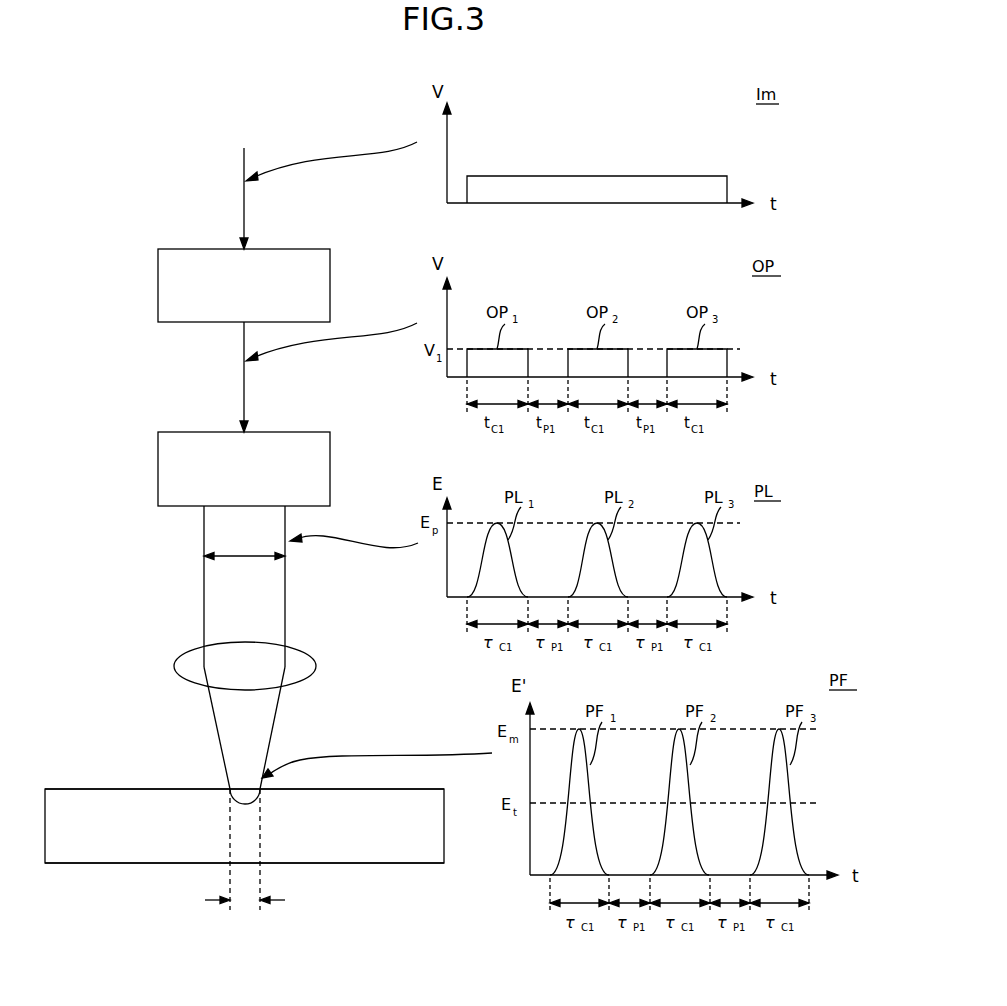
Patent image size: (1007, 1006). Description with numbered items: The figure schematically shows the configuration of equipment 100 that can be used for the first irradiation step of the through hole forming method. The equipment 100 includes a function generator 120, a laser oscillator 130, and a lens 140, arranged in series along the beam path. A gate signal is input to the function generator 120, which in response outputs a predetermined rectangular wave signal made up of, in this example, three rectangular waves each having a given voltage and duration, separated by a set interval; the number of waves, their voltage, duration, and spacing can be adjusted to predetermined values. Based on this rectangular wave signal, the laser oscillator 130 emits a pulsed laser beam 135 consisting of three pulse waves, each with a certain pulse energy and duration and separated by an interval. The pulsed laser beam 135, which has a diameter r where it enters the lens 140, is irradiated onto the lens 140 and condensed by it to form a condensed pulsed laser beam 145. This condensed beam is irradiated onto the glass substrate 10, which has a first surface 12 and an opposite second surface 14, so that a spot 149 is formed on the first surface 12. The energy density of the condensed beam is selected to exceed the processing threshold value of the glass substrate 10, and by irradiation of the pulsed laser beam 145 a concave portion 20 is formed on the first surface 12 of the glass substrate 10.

The equipment 100 is at (126, 104).
The function generator 120 is at (158, 285).
The laser oscillator 130 is at (158, 469).
The pulsed laser beam 135 is at (204, 579).
The lens 140 is at (177, 663).
The pulsed laser beam 145 is at (219, 735).
The spot 149 is at (240, 783).
The glass substrate 10 is at (444, 843).
The first surface 12 is at (96, 782).
The second surface 14 is at (93, 872).
The concave portion 20 is at (250, 803).